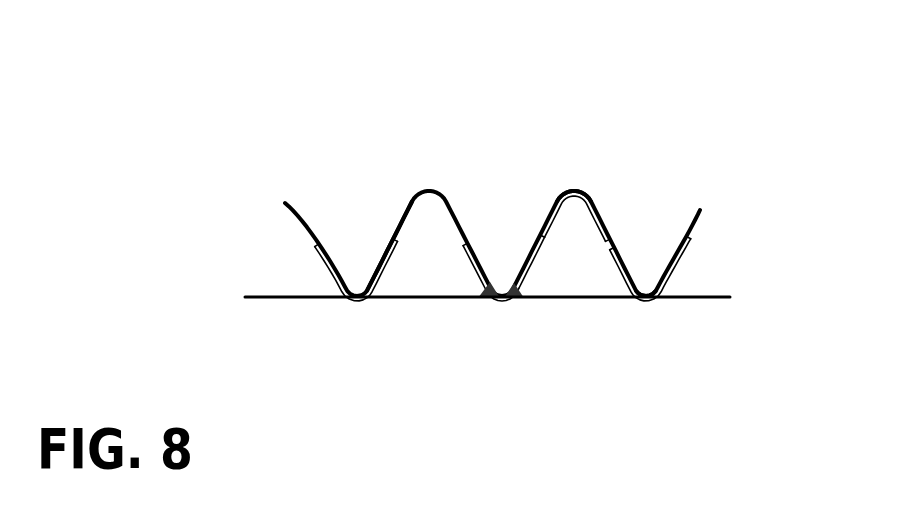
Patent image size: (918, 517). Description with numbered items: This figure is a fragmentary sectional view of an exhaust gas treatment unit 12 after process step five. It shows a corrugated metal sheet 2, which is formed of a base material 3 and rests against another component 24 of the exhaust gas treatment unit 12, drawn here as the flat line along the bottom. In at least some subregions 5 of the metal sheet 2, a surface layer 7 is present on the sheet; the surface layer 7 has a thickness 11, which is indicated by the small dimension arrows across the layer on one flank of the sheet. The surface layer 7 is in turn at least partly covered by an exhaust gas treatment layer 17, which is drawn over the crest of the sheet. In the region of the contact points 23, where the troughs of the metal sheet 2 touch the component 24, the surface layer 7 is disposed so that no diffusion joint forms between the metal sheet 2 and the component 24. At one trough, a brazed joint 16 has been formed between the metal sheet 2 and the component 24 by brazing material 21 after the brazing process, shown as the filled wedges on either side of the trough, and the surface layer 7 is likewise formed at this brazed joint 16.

The metal sheet 2 is at (605, 228).
The base material 3 is at (578, 192).
The subregions 5 is at (377, 272).
The surface layer 7 is at (691, 241).
The thickness 11 is at (438, 273).
The exhaust gas treatment unit 12 is at (392, 154).
The brazed joint 16 is at (513, 297).
The exhaust gas treatment layer 17 is at (552, 212).
The brazing material 21 is at (497, 297).
The contact points 23 is at (653, 297).
The component 24 is at (717, 299).